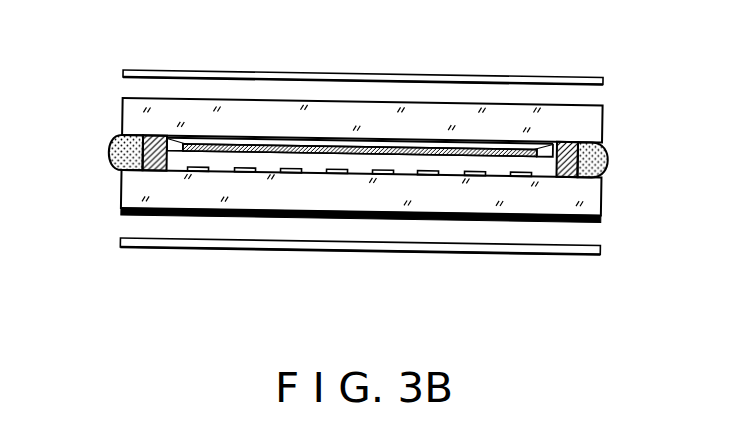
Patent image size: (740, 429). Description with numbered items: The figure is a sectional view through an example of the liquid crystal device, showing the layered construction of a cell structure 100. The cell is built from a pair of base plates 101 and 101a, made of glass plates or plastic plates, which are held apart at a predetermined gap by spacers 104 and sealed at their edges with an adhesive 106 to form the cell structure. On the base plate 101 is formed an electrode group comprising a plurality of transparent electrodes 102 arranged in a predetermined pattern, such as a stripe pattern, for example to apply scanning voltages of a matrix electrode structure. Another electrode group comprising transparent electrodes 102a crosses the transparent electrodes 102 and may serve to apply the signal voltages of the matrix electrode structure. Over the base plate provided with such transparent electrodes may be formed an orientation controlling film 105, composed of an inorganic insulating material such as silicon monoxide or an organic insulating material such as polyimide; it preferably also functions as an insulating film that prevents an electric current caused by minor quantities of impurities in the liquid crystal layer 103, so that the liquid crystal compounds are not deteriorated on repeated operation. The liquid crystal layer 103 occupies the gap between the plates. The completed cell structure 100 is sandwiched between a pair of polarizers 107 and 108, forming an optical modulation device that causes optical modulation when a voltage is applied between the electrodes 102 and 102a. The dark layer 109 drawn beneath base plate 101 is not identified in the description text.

The cell structure 100 is at (707, 96).
The base plate 101 is at (593, 203).
The base plate 101a is at (595, 122).
The transparent electrodes 102 is at (245, 171).
The transparent electrodes 102a is at (518, 140).
The liquid crystal layer 103 is at (273, 143).
The spacers 104 is at (152, 140).
The orientation controlling film 105 is at (363, 153).
The adhesive 106 is at (118, 160).
The polarizer 107 is at (598, 252).
The polarizer 108 is at (607, 80).
The reflector layer 109 is at (128, 217).